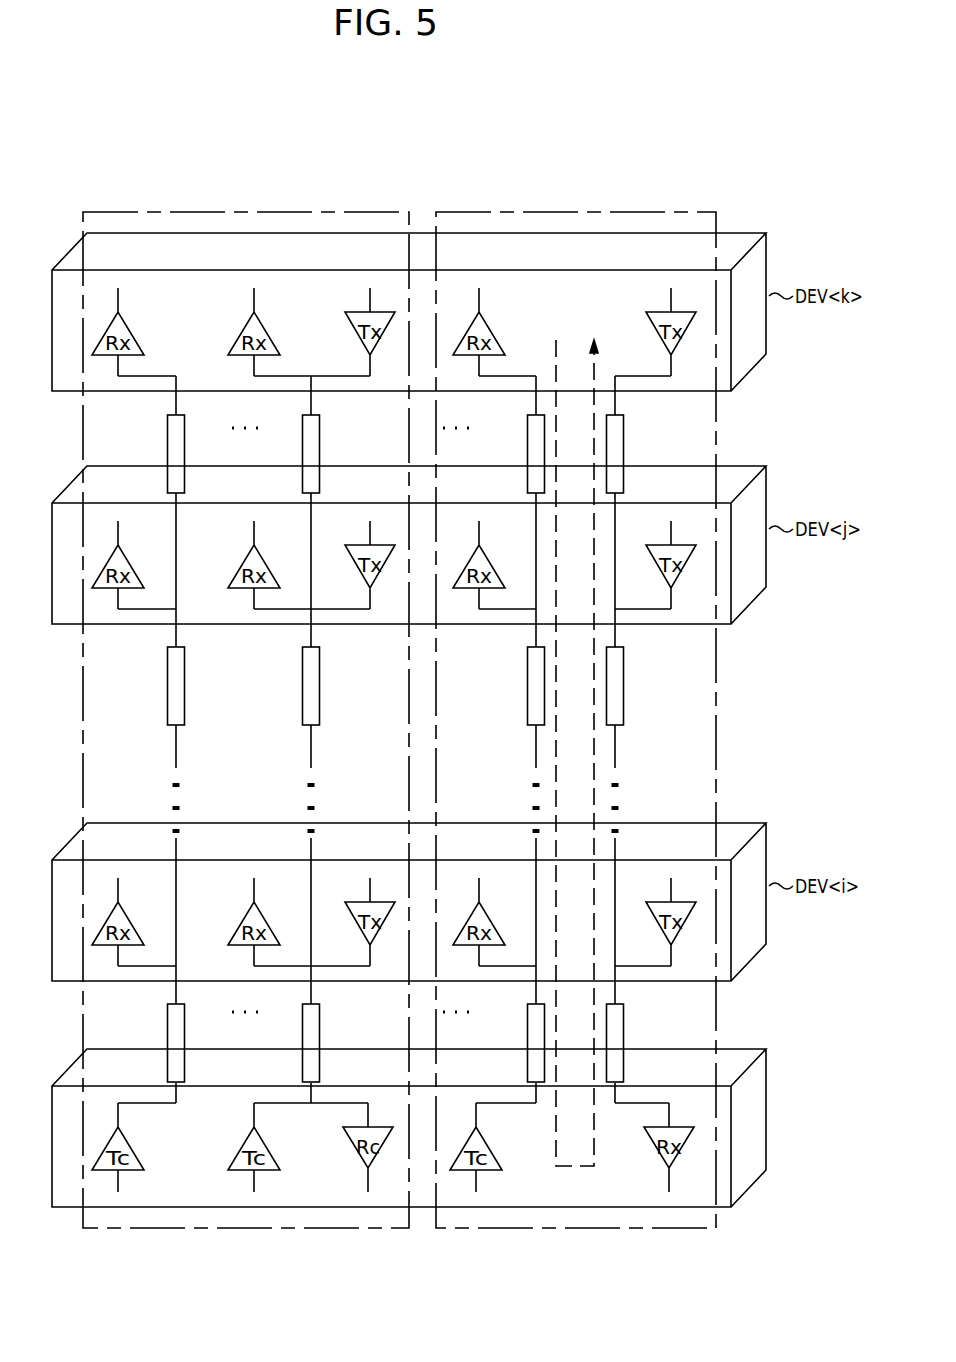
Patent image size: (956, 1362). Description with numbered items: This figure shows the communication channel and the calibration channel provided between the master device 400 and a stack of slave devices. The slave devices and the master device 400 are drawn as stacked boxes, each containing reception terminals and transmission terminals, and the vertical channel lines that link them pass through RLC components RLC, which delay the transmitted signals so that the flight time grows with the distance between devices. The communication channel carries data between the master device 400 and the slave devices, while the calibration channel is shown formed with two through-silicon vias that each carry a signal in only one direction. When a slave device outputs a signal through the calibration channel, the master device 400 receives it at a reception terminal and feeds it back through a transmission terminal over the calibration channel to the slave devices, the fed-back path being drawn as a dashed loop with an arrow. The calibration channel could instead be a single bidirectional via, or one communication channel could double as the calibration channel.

The master device 400 is at (767, 1109).
The RLC components RLC is at (415, 739).